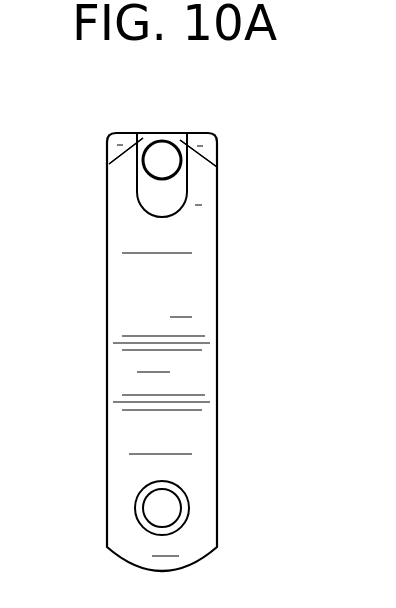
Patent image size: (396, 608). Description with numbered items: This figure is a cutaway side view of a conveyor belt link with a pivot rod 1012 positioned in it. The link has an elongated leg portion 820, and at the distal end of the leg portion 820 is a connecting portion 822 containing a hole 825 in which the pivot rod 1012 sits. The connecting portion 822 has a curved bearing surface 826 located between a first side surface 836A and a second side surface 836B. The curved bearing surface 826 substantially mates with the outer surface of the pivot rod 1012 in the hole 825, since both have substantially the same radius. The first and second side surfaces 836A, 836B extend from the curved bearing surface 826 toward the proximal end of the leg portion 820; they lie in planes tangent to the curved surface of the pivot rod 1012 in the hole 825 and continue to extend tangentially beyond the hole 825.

The leg portion 820 is at (120, 305).
The connecting portion 822 is at (162, 140).
The curved bearing surface 826 is at (166, 140).
The first side surface 836A is at (138, 134).
The second side surface 836B is at (188, 135).
The hole 825 is at (166, 165).
The pivot rod 1012 is at (180, 177).